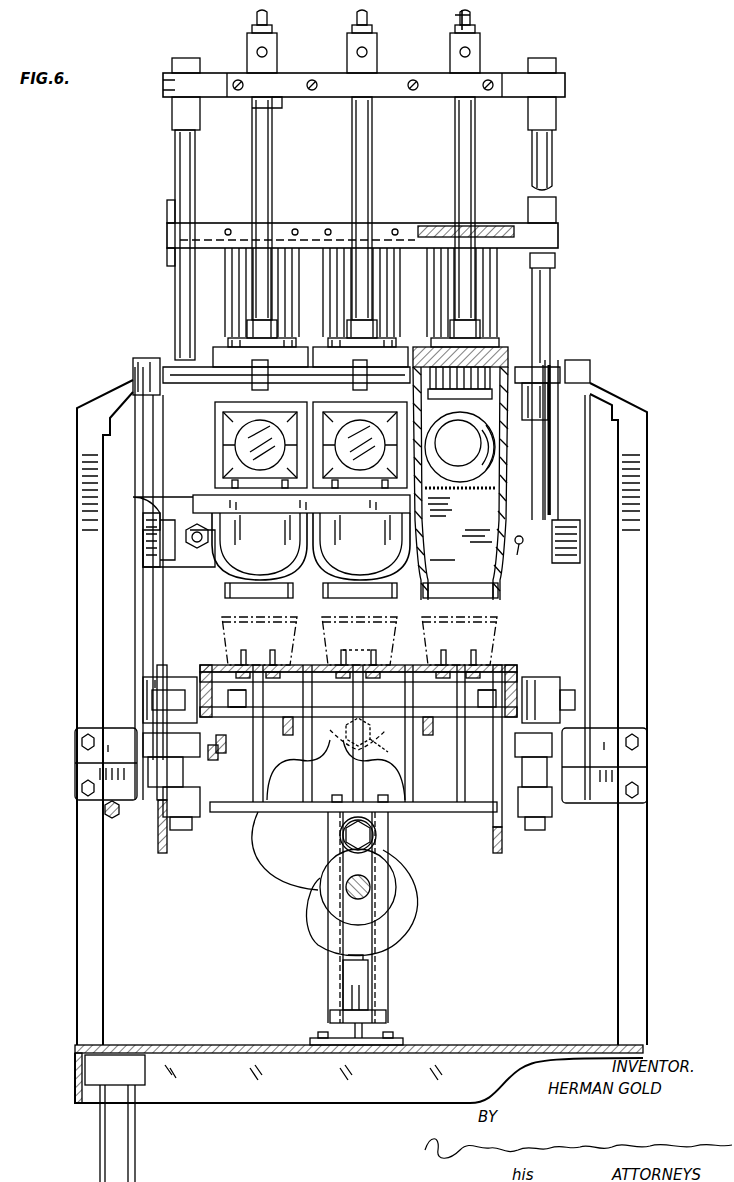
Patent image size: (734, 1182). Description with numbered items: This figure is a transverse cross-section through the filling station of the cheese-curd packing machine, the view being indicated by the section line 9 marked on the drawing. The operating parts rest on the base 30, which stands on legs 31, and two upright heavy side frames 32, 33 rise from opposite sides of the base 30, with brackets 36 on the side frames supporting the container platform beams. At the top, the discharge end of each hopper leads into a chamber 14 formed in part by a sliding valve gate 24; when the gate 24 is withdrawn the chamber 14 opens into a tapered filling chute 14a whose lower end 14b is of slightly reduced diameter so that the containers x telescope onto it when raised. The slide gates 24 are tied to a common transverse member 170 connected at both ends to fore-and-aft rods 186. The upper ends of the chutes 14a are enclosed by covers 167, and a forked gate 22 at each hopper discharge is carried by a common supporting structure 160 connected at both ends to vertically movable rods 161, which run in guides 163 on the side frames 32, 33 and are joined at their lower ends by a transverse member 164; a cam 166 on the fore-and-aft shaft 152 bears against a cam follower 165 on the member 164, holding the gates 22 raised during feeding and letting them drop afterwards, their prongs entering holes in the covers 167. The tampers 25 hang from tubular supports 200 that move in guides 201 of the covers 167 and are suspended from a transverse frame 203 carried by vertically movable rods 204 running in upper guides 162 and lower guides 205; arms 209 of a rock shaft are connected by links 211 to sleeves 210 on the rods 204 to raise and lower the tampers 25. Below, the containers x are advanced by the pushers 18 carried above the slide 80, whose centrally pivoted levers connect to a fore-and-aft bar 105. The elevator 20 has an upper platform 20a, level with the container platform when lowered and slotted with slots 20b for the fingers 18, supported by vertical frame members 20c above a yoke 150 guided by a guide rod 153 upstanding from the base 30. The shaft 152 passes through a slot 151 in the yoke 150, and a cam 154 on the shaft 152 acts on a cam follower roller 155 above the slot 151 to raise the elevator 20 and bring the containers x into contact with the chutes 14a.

The section line 9 is at (480, 23).
The chamber 14 is at (505, 440).
The tapered filling chute 14a is at (495, 560).
The lower ends of the chutes 14b is at (330, 592).
The pusher 18 is at (344, 660).
The elevator 20 is at (500, 720).
The elevator platform 20a is at (296, 665).
The slots 20b is at (243, 660).
The frame members 20c is at (262, 740).
The forked gate 22 is at (320, 270).
The sliding valve gate 24 is at (265, 512).
The tamper 25 is at (512, 362).
The base 30 is at (225, 1045).
The legs 31 is at (130, 1150).
The side frame 32 is at (78, 600).
The side frame 33 is at (636, 617).
The brackets 36 is at (80, 750).
The slide 80 is at (280, 712).
The fore-and-aft bar 105 is at (226, 760).
The yoke 150 is at (380, 966).
The slot 151 is at (345, 1000).
The fore-and-aft shaft 152 is at (348, 890).
The guide rod 153 is at (370, 997).
The cam 154 is at (405, 912).
The cam follower roller 155 is at (368, 835).
The supporting structure 160 is at (222, 224).
The vertically movable rods 161 is at (555, 296).
The upper guides 162 is at (185, 385).
The guides 163 is at (160, 620).
The transverse member 164 is at (348, 740).
The cam follower 165 is at (394, 735).
The cam 166 is at (275, 855).
The covers 167 is at (510, 350).
The transverse member 170 is at (183, 497).
The fore-and-aft rods 186 is at (518, 556).
The tubular supports 200 is at (263, 165).
The guides 201 is at (250, 330).
The transverse frame 203 is at (385, 73).
The vertically movable rods 204 is at (185, 165).
The lower guides 205 is at (175, 680).
The arms 209 is at (158, 848).
The sleeves 210 is at (150, 740).
The links 211 is at (160, 806).
The containers x is at (422, 622).